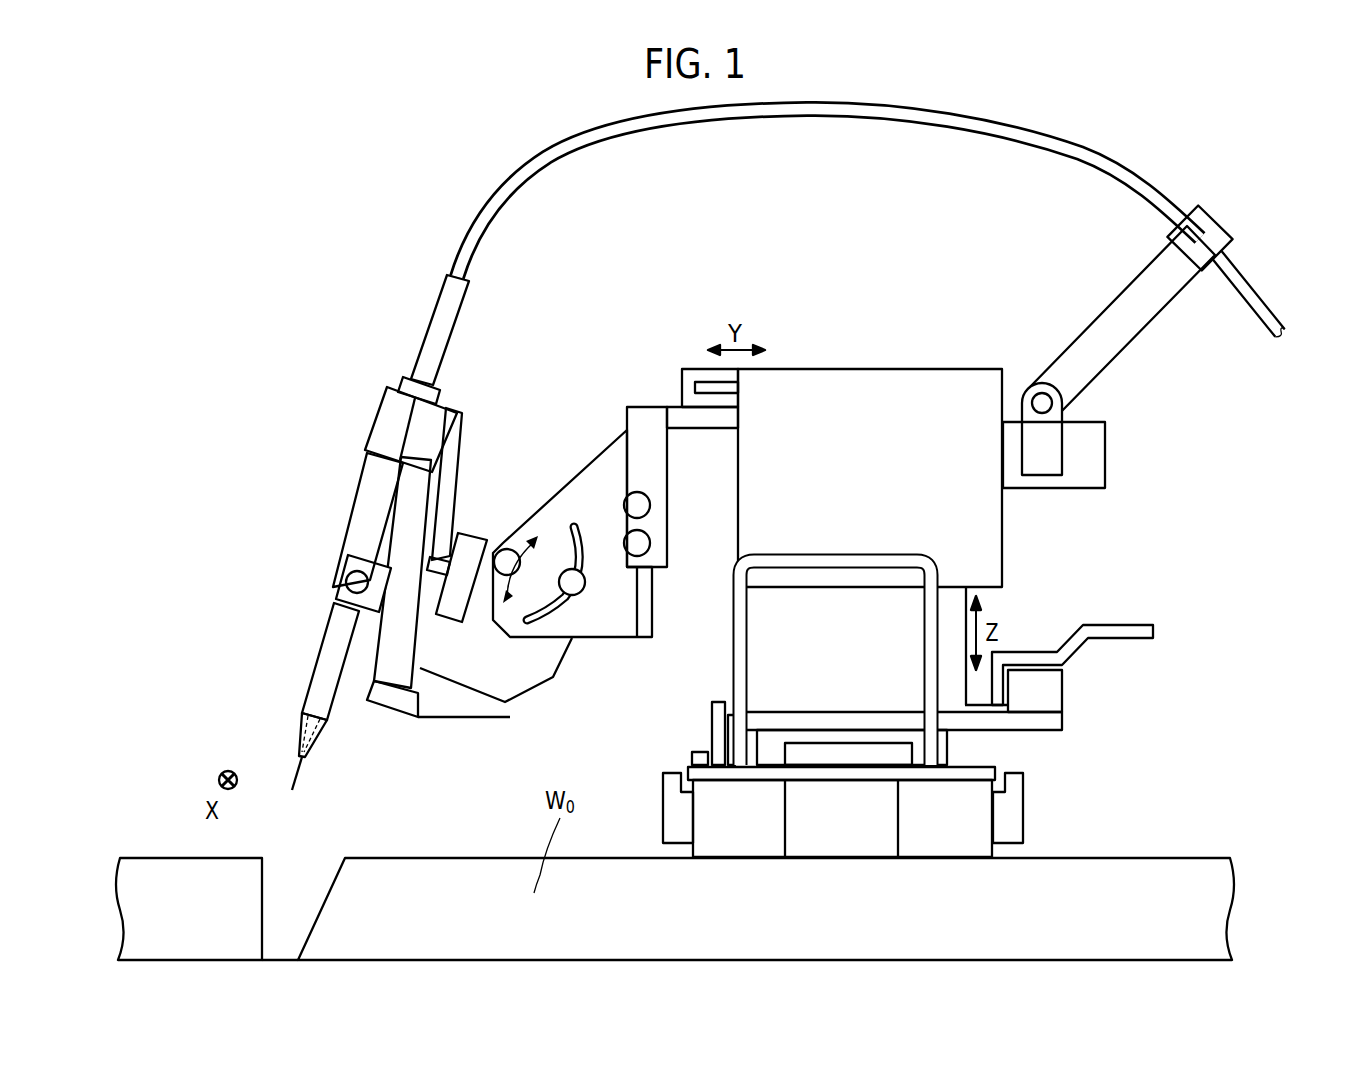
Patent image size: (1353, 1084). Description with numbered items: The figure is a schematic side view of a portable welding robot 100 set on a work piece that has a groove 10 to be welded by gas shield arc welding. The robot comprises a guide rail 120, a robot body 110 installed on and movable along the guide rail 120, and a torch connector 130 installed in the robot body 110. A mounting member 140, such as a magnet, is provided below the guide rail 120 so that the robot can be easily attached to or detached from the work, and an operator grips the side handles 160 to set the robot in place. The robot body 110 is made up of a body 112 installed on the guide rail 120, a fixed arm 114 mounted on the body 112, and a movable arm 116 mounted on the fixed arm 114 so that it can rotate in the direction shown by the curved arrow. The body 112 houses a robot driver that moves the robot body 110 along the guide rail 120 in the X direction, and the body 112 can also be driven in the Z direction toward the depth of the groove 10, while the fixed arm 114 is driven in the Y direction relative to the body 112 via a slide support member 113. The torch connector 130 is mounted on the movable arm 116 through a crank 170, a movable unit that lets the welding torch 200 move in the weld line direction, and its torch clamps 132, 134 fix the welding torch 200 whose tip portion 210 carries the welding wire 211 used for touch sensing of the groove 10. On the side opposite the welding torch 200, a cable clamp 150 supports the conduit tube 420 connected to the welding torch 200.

The groove 10 is at (297, 898).
The portable welding robot 100 is at (393, 181).
The robot body 110 is at (820, 263).
The body 112 is at (791, 390).
The slide support member 113 is at (702, 418).
The fixed arm 114 is at (598, 492).
The movable arm 116 is at (482, 508).
The guide rail 120 is at (898, 755).
The torch connector 130 is at (348, 352).
The torch clamp 132 is at (383, 423).
The torch clamp 134 is at (345, 560).
The mounting member 140 is at (915, 820).
The cable clamp 150 is at (1142, 310).
The handle 160 is at (740, 625).
The crank 170 is at (470, 547).
The welding torch 200 is at (326, 634).
The torch nozzle 210 is at (325, 707).
The welding wire 211 is at (303, 775).
The conduit tube 420 is at (1258, 320).